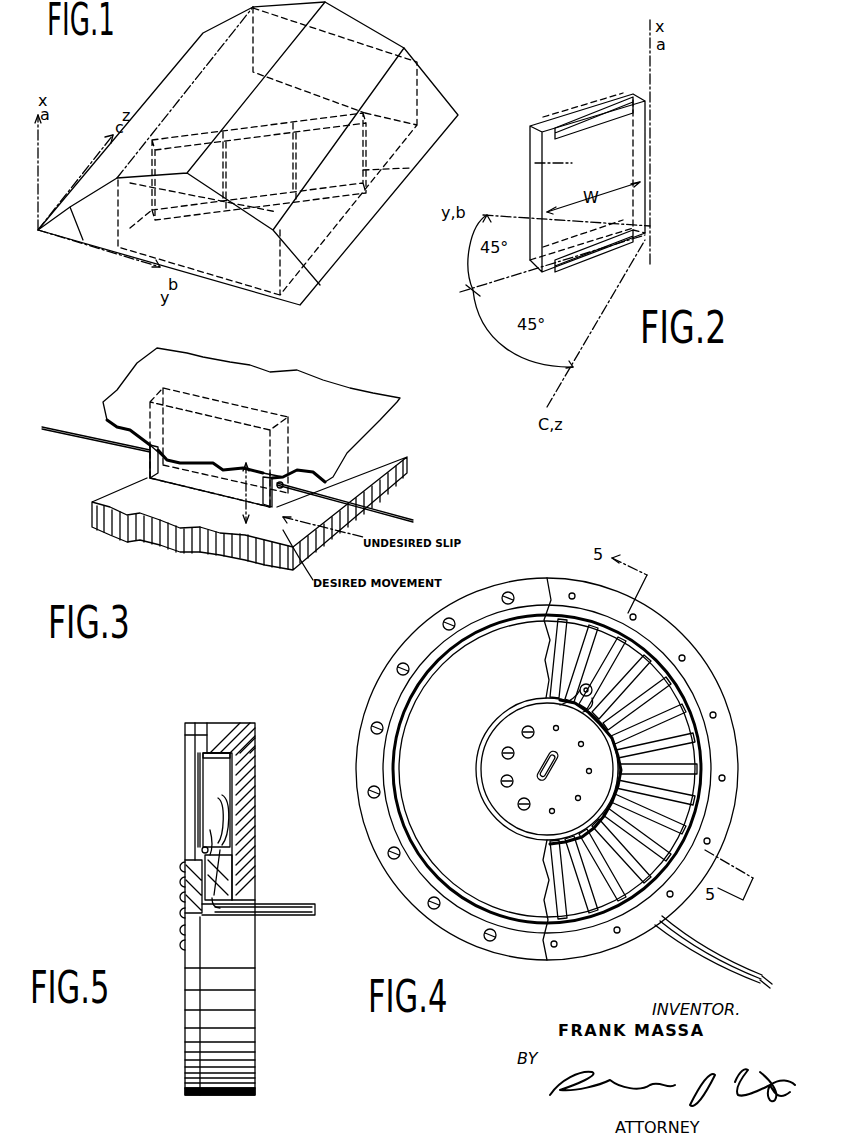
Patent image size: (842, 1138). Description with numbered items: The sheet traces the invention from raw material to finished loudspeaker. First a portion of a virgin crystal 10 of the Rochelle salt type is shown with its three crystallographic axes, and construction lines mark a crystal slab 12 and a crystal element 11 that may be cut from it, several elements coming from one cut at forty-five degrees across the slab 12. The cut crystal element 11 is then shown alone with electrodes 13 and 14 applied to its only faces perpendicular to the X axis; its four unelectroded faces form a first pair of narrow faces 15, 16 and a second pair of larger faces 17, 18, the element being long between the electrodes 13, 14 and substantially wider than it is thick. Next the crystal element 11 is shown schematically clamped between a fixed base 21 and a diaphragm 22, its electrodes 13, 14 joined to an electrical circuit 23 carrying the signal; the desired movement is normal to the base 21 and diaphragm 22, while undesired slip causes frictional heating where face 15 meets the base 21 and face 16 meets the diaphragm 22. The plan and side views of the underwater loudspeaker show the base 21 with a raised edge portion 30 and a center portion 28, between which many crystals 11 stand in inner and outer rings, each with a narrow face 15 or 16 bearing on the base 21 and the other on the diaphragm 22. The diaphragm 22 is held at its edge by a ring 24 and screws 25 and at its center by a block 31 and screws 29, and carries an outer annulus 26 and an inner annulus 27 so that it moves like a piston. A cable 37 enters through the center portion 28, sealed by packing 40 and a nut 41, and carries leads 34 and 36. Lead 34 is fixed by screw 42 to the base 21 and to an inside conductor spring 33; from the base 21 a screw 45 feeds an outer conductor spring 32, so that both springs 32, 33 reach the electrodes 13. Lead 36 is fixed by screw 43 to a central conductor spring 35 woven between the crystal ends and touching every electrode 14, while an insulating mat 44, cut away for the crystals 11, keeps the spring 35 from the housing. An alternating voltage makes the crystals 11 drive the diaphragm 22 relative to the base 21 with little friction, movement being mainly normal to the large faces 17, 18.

In FIG. 1, the virgin crystal 10 is at (398, 48).
In FIG. 1, the crystal element 11 is at (413, 178).
In FIG. 2, the crystal element 11 is at (558, 151).
In FIG. 3, the crystal element 11 is at (163, 477).
In FIG. 4, the crystal element 11 is at (630, 652).
In FIG. 5, the crystal element 11 is at (223, 772).
In FIG. 1, the crystal slab 12 is at (333, 222).
In FIG. 2, the electrode 13 is at (633, 106).
In FIG. 3, the electrode 13 is at (263, 517).
In FIG. 4, the electrode 13 is at (733, 778).
In FIG. 2, the electrode 14 is at (640, 245).
In FIG. 3, the electrode 14 is at (143, 455).
In FIG. 4, the electrode 14 is at (680, 725).
In FIG. 2, the narrow unelectroded face 15 is at (537, 147).
In FIG. 3, the narrow unelectroded face 15 is at (113, 530).
In FIG. 2, the narrow unelectroded face 16 is at (637, 170).
In FIG. 3, the narrow unelectroded face 16 is at (258, 440).
In FIG. 2, the large unelectroded face 17 is at (572, 163).
In FIG. 2, the large unelectroded face 18 is at (627, 137).
In FIG. 3, the base 21 is at (157, 547).
In FIG. 5, the base 21 is at (255, 723).
In FIG. 3, the diaphragm 22 is at (357, 395).
In FIG. 4, the diaphragm 22 is at (427, 703).
In FIG. 5, the diaphragm 22 is at (198, 790).
In FIG. 3, the electrical circuit 23 is at (397, 503).
In FIG. 4, the electrical circuit 23 is at (560, 801).
In FIG. 4, the ring 24 is at (427, 638).
In FIG. 5, the ring 24 is at (185, 725).
In FIG. 4, the screws 25 is at (397, 677).
In FIG. 5, the screws 25 is at (188, 738).
In FIG. 4, the outer annulus 26 is at (387, 740).
In FIG. 5, the outer annulus 26 is at (195, 755).
In FIG. 4, the inner annulus 27 is at (502, 783).
In FIG. 5, the inner annulus 27 is at (183, 868).
In FIG. 5, the center portion 28 is at (237, 858).
In FIG. 4, the screws 29 is at (502, 753).
In FIG. 5, the screws 29 is at (183, 908).
In FIG. 4, the raised edge portion 30 is at (608, 607).
In FIG. 5, the raised edge portion 30 is at (218, 723).
In FIG. 5, the block 31 is at (185, 880).
In FIG. 4, the outer conductor spring 32 is at (667, 702).
In FIG. 5, the outer conductor spring 32 is at (230, 752).
In FIG. 4, the inside conductor spring 33 is at (547, 784).
In FIG. 5, the inside conductor spring 33 is at (240, 850).
In FIG. 4, the lead 34 is at (745, 972).
In FIG. 5, the lead 34 is at (208, 830).
In FIG. 4, the central conductor spring 35 is at (700, 758).
In FIG. 5, the central conductor spring 35 is at (223, 803).
In FIG. 4, the lead 36 is at (752, 989).
In FIG. 5, the lead 36 is at (222, 818).
In FIG. 4, the cable 37 is at (718, 928).
In FIG. 5, the cable 37 is at (293, 918).
In FIG. 5, the packing 40 is at (223, 897).
In FIG. 5, the nut 41 is at (237, 900).
In FIG. 4, the screw 42 is at (553, 707).
In FIG. 5, the screw 42 is at (202, 848).
In FIG. 5, the screw 43 is at (203, 807).
In FIG. 5, the insulating mat 44 is at (245, 788).
In FIG. 4, the screw 45 is at (618, 628).
In FIG. 5, the screw 45 is at (198, 768).